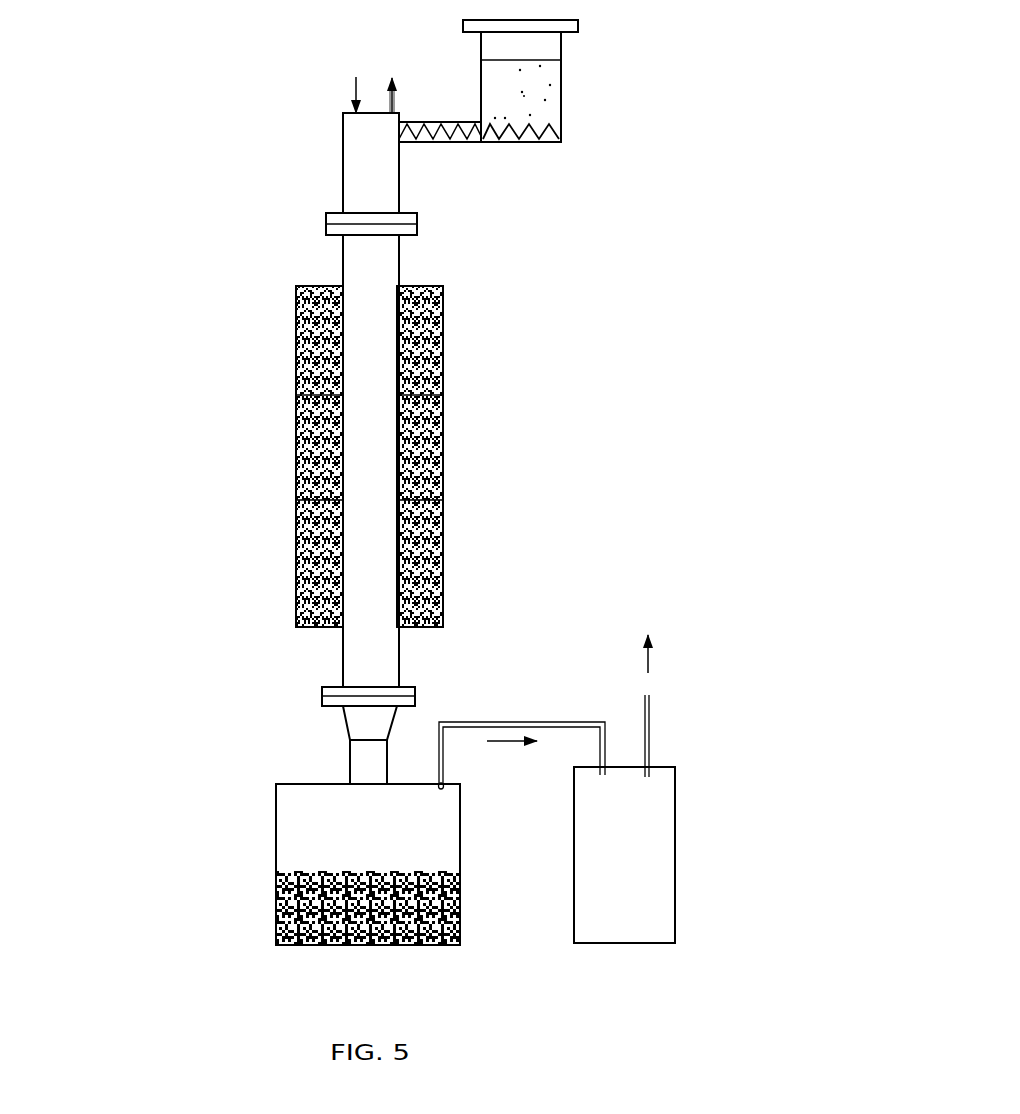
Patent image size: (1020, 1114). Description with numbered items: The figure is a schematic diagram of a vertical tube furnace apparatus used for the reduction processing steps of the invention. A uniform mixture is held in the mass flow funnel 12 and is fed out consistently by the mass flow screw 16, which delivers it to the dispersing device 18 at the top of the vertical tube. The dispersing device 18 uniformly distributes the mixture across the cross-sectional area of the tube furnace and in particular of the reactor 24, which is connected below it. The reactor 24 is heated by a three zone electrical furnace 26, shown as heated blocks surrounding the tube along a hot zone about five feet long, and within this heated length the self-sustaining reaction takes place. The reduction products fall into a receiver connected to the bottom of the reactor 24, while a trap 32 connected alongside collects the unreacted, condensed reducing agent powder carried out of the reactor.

The mass flow funnel 12 is at (590, 92).
The mass flow screw 16 is at (550, 172).
The dispersing device 18 is at (327, 150).
The reactor 24 is at (335, 250).
The three zone electrical furnace 26 is at (278, 457).
The trap 32 is at (720, 933).